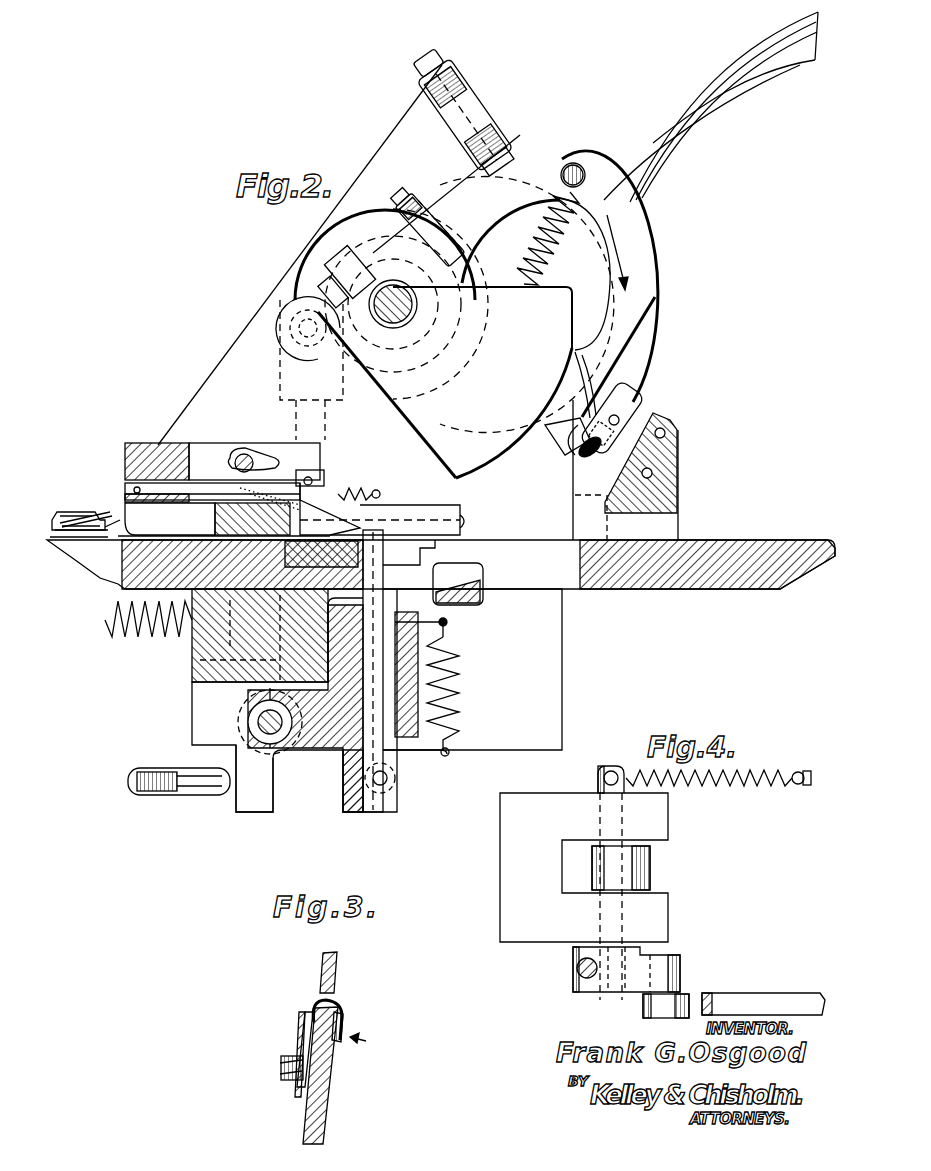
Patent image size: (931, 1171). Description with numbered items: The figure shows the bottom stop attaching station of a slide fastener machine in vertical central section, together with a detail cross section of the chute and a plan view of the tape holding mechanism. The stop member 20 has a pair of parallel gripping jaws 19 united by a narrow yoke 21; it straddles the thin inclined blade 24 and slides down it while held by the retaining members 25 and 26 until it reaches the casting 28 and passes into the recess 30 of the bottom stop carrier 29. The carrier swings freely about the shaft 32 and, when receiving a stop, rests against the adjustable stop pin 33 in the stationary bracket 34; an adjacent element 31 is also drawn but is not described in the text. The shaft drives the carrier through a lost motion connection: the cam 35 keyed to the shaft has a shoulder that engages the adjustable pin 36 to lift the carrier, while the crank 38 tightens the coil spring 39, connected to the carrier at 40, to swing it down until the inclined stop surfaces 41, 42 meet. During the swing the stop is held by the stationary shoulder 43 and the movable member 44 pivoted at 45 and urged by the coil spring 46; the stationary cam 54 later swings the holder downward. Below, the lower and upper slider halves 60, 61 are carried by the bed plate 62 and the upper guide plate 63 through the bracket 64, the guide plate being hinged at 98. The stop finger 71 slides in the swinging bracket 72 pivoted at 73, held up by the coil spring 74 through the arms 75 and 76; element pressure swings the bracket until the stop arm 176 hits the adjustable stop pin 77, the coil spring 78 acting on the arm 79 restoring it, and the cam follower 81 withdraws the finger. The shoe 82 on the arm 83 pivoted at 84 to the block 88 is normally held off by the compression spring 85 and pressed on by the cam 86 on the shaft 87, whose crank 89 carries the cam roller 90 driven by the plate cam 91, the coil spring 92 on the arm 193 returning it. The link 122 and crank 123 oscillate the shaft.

In FIG. 3, the gripping jaws 19 is at (306, 1028).
In FIG. 2, the stop member 20 is at (591, 308).
In FIG. 3, the stop member 20 is at (371, 1044).
In FIG. 3, the yoke 21 is at (333, 1006).
In FIG. 2, the blade 24 is at (757, 68).
In FIG. 3, the blade 24 is at (322, 1108).
In FIG. 3, the retaining member 25 is at (300, 1015).
In FIG. 2, the retaining member 26 is at (738, 52).
In FIG. 3, the retaining member 26 is at (336, 965).
In FIG. 2, the casting 28 is at (660, 488).
In FIG. 2, the bottom stop carrier 29 is at (568, 164).
In FIG. 2, the recess 30 is at (622, 398).
In FIG. 2, the saw blade 31 is at (483, 455).
In FIG. 2, the shaft 32 is at (398, 292).
In FIG. 2, the adjustable stop pin 33 is at (454, 184).
In FIG. 2, the stationary bracket 34 is at (478, 128).
In FIG. 2, the cam 35 is at (400, 376).
In FIG. 2, the adjustable pin 36 is at (528, 262).
In FIG. 2, the crank 38 is at (388, 410).
In FIG. 2, the coil spring 39 is at (580, 210).
In FIG. 2, the spring connection 40 is at (575, 165).
In FIG. 2, the inclined stop surface 41 is at (560, 448).
In FIG. 2, the inclined stop surface 42 is at (395, 518).
In FIG. 2, the stationary shoulder 43 is at (580, 452).
In FIG. 2, the movable member 44 is at (655, 465).
In FIG. 2, the pivot 45 is at (620, 420).
In FIG. 2, the coil spring 46 is at (645, 386).
In FIG. 2, the stationary cam 54 is at (483, 585).
In FIG. 2, the lower slider half 60 is at (78, 545).
In FIG. 2, the upper slider half 61 is at (72, 520).
In FIG. 2, the bed plate 62 is at (110, 565).
In FIG. 2, the upper guide plate 63 is at (110, 512).
In FIG. 2, the bracket 64 is at (112, 522).
In FIG. 2, the stop finger 71 is at (376, 671).
In FIG. 2, the swinging bracket 72 is at (328, 735).
In FIG. 2, the pivot 73 is at (255, 715).
In FIG. 2, the coil spring 74 is at (456, 680).
In FIG. 2, the arm 75 is at (420, 756).
In FIG. 2, the arm 76 is at (446, 620).
In FIG. 2, the adjustable stop pin 77 is at (188, 790).
In FIG. 2, the coil spring 78 is at (135, 636).
In FIG. 2, the arm 79 is at (215, 665).
In FIG. 2, the cam follower 81 is at (386, 782).
In FIG. 2, the shoe 82 is at (330, 520).
In FIG. 2, the arm 83 is at (212, 490).
In FIG. 2, the pivot 84 is at (134, 490).
In FIG. 2, the compression spring 85 is at (215, 515).
In FIG. 2, the cam 86 is at (268, 462).
In FIG. 4, the cam 86 is at (640, 872).
In FIG. 2, the shaft 87 is at (244, 454).
In FIG. 4, the shaft 87 is at (600, 788).
In FIG. 2, the block 88 is at (150, 455).
In FIG. 4, the block 88 is at (510, 852).
In FIG. 4, the crank 89 is at (630, 985).
In FIG. 4, the cam roller 90 is at (650, 1008).
In FIG. 4, the plate cam 91 is at (745, 1000).
In FIG. 2, the coil spring 92 is at (360, 505).
In FIG. 4, the coil spring 92 is at (760, 790).
In FIG. 2, the hinge 98 is at (468, 522).
In FIG. 2, the link 122 is at (285, 410).
In FIG. 2, the crank 123 is at (292, 322).
In FIG. 2, the stop arm 176 is at (250, 800).
In FIG. 4, the arm 193 is at (610, 770).